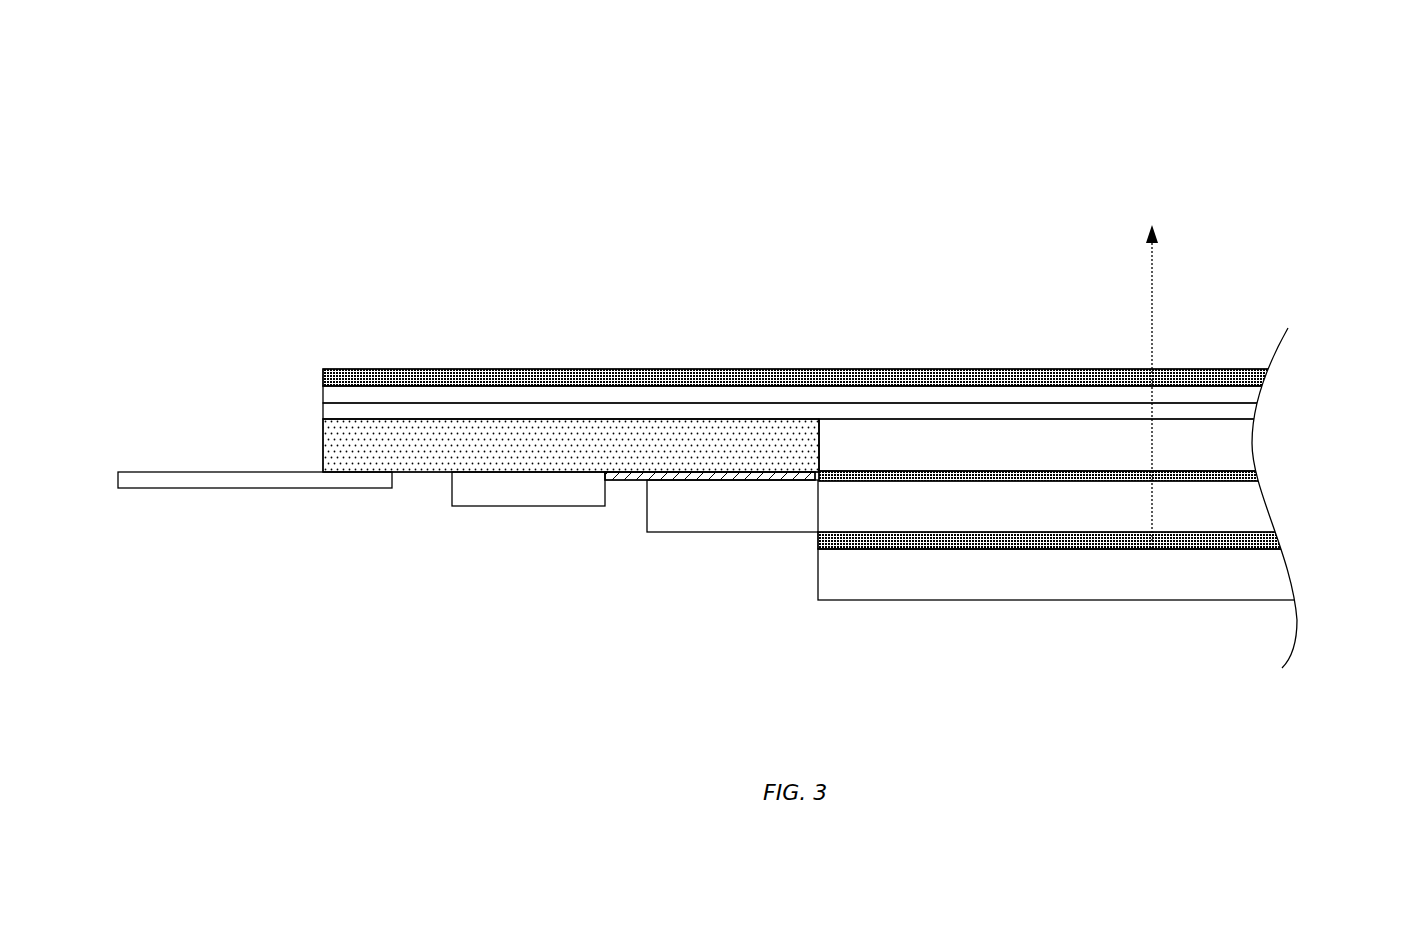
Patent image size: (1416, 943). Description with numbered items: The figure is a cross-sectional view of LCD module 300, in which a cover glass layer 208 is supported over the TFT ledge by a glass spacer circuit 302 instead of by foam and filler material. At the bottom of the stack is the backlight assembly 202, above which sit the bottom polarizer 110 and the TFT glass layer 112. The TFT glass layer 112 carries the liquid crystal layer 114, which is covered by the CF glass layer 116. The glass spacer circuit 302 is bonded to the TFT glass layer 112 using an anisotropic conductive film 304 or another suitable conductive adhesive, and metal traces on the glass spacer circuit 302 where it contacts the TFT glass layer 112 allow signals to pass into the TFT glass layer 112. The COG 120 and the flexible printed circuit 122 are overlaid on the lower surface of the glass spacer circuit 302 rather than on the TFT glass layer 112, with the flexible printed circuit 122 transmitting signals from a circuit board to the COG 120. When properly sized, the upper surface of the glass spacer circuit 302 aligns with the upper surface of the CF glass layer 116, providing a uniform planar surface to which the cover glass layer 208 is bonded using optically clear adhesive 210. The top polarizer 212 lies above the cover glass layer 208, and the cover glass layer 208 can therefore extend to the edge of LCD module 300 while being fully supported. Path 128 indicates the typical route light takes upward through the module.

The LCD module 300 is at (397, 152).
The top polarizer 212 is at (871, 369).
The cover glass layer 208 is at (323, 395).
The optically clear adhesive 210 is at (323, 412).
The glass spacer circuit 302 is at (323, 447).
The CF glass layer 116 is at (1253, 455).
The liquid crystal layer 114 is at (1256, 478).
The anisotropic conductive film 304 is at (700, 480).
The COG 120 is at (528, 506).
The TFT glass layer 112 is at (647, 507).
The bottom polarizer 110 is at (818, 540).
The backlight assembly 202 is at (818, 572).
The flexible printed circuit 122 is at (302, 488).
The path 128 is at (1150, 272).